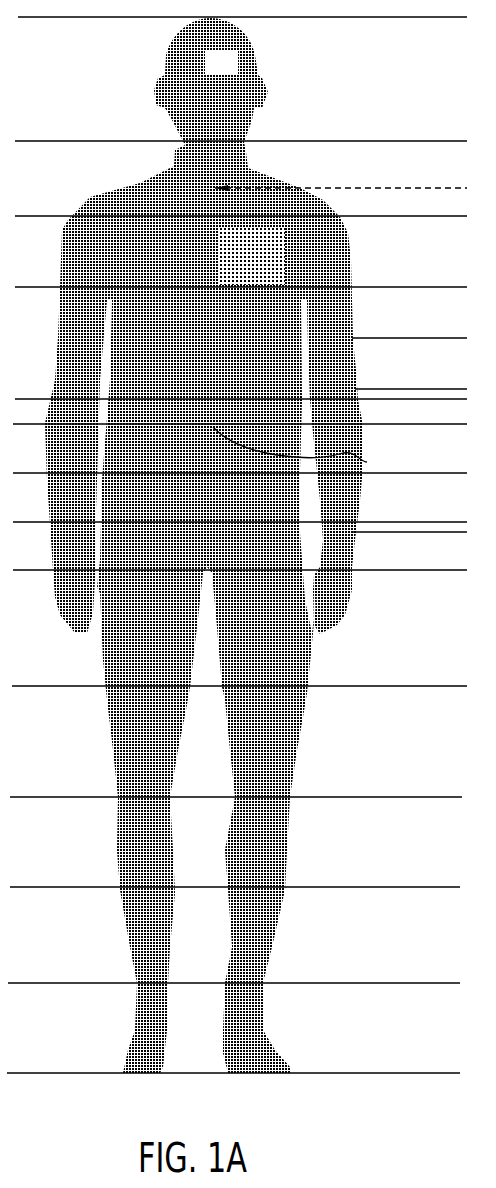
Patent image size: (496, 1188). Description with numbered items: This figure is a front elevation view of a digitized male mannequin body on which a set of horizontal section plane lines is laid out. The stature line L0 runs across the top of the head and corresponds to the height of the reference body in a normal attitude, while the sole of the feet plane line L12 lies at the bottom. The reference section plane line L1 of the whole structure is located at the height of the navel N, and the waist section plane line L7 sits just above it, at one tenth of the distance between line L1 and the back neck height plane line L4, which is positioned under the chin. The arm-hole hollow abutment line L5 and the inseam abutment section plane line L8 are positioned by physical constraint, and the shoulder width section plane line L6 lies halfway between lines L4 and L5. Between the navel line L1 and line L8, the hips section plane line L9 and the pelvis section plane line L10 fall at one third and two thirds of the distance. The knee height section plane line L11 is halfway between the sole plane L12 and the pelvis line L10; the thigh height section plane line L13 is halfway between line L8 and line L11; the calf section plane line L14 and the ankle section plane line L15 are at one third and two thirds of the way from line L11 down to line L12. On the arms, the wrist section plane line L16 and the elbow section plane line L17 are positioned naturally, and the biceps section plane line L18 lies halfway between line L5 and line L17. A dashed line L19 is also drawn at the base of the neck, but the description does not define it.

The stature line L0 is at (449, 19).
The back neck height plane line L4 is at (414, 141).
The neck dashed reference line L19 is at (369, 188).
The shoulder width section plane line L6 is at (402, 217).
The arm-hole hollow abutment line L5 is at (423, 287).
The biceps section plane line L18 is at (392, 338).
The elbows section plane line L17 is at (398, 389).
The waist section plane line L7 is at (434, 399).
The reference section plane line L1 is at (462, 425).
The navel N is at (367, 462).
The hips section plane line L9 is at (412, 473).
The pelvis section plane line L10 is at (445, 522).
The wrists section plane line L16 is at (427, 533).
The inseam abutment section plane line L8 is at (423, 572).
The thigh height section plane line L13 is at (423, 687).
The knee height section plane line L11 is at (427, 800).
The calf section plane line L14 is at (425, 890).
The ankle section plane line L15 is at (423, 985).
The sole of the feet plane line L12 is at (422, 1075).